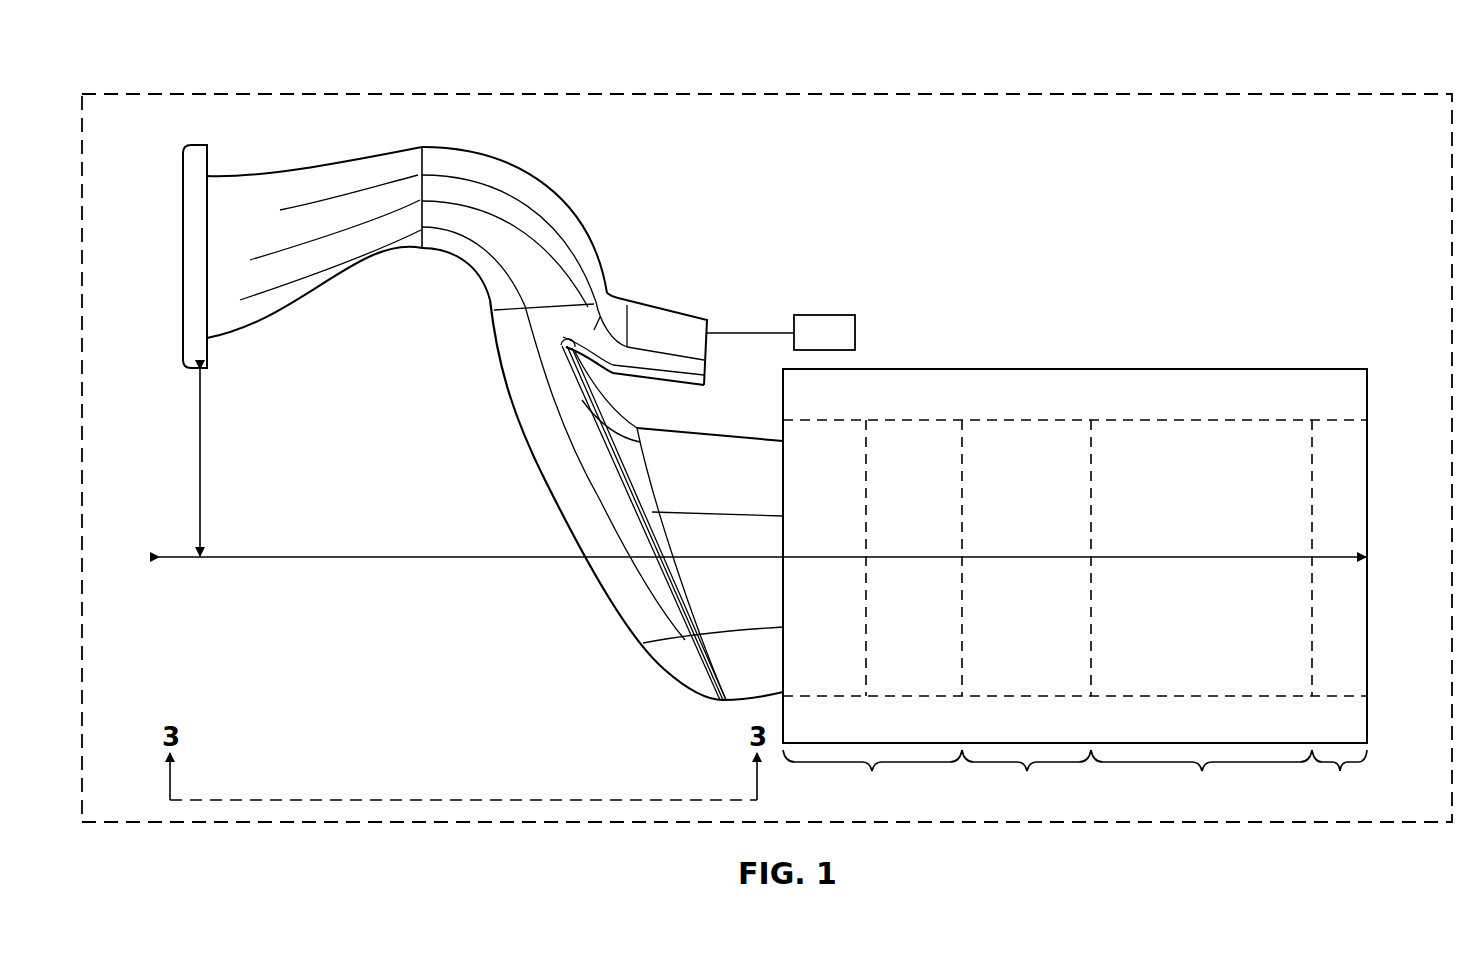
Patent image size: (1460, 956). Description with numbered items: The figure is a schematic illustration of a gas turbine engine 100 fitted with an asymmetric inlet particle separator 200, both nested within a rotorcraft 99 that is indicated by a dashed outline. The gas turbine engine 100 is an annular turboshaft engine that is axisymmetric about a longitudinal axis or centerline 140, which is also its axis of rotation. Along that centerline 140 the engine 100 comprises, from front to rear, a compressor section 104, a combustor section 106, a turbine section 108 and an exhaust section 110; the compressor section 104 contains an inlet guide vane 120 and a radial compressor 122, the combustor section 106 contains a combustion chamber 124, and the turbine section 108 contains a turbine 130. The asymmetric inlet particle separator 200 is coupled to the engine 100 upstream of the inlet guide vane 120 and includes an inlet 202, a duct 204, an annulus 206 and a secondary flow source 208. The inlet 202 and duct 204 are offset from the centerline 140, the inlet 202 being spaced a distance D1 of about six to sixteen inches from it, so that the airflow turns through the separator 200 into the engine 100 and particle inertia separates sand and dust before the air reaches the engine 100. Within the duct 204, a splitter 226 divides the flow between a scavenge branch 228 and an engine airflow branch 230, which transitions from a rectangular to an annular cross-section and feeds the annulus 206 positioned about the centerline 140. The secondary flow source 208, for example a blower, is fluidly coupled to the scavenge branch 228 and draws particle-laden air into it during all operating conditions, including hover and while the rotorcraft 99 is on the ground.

The rotorcraft 99 is at (1302, 94).
The asymmetric inlet particle separator 200 is at (213, 45).
The inlet 202 is at (183, 180).
The duct 204 is at (597, 222).
The annulus 206 is at (728, 432).
The secondary flow source 208 is at (848, 346).
The splitter 226 is at (556, 347).
The scavenge branch 228 is at (712, 322).
The engine airflow branch 230 is at (587, 568).
The gas turbine engine 100 is at (1073, 369).
The inlet guide vane 120 is at (818, 420).
The radial compressor 122 is at (920, 420).
The combustion chamber 124 is at (1034, 420).
The turbine 130 is at (1213, 420).
The compressor section 104 is at (872, 778).
The combustor section 106 is at (1026, 776).
The turbine section 108 is at (1201, 782).
The exhaust section 110 is at (1340, 772).
The centerline 140 is at (1367, 557).
The distance D1 is at (200, 457).